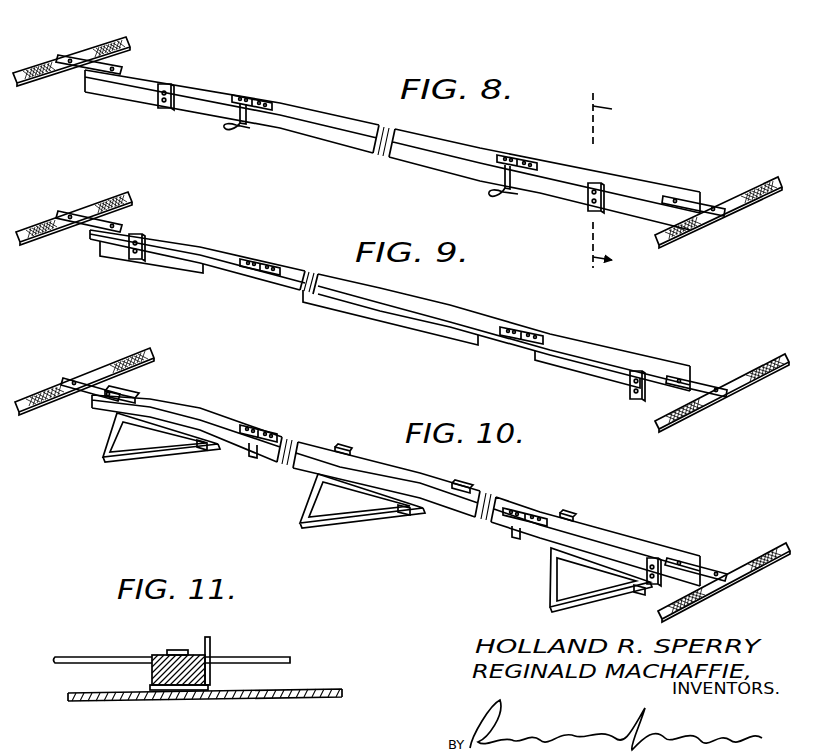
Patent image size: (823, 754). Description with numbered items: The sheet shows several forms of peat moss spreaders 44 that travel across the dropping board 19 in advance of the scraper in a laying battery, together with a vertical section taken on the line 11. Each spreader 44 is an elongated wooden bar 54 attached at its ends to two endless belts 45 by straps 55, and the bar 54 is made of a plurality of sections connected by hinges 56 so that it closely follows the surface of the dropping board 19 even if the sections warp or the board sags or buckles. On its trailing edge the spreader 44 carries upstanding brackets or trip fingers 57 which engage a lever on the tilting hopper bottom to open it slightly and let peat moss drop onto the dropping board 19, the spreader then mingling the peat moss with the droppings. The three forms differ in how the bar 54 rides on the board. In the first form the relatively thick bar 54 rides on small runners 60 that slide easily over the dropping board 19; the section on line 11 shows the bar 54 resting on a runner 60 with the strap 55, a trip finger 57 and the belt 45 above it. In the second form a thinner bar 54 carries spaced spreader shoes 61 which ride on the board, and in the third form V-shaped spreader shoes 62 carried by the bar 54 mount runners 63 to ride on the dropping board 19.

In FIG. 8, the section line 11 is at (582, 176).
In FIG. 11, the dropping board 19 is at (270, 700).
In FIG. 8, the spreader 44 is at (312, 107).
In FIG. 9, the spreader 44 is at (217, 249).
In FIG. 10, the spreader 44 is at (208, 407).
In FIG. 11, the spreader 44 is at (152, 650).
In FIG. 8, the endless belt 45 is at (40, 65).
In FIG. 9, the endless belt 45 is at (96, 207).
In FIG. 10, the endless belt 45 is at (128, 352).
In FIG. 11, the endless belt 45 is at (266, 657).
In FIG. 8, the elongated wooden bar 54 is at (467, 147).
In FIG. 9, the elongated wooden bar 54 is at (446, 299).
In FIG. 10, the elongated wooden bar 54 is at (317, 444).
In FIG. 11, the elongated wooden bar 54 is at (150, 673).
In FIG. 8, the strap 55 is at (697, 199).
In FIG. 9, the strap 55 is at (700, 388).
In FIG. 10, the strap 55 is at (100, 393).
In FIG. 11, the strap 55 is at (175, 650).
In FIG. 8, the hinge 56 is at (246, 93).
In FIG. 9, the hinge 56 is at (277, 264).
In FIG. 10, the hinge 56 is at (252, 457).
In FIG. 8, the trip finger 57 is at (603, 190).
In FIG. 9, the trip finger 57 is at (146, 239).
In FIG. 10, the trip finger 57 is at (652, 557).
In FIG. 11, the trip finger 57 is at (211, 645).
In FIG. 8, the runner 60 is at (236, 128).
In FIG. 11, the runner 60 is at (166, 691).
In FIG. 9, the spreader shoe 61 is at (201, 274).
In FIG. 10, the V-shaped spreader shoe 62 is at (145, 457).
In FIG. 10, the runner 63 is at (203, 450).